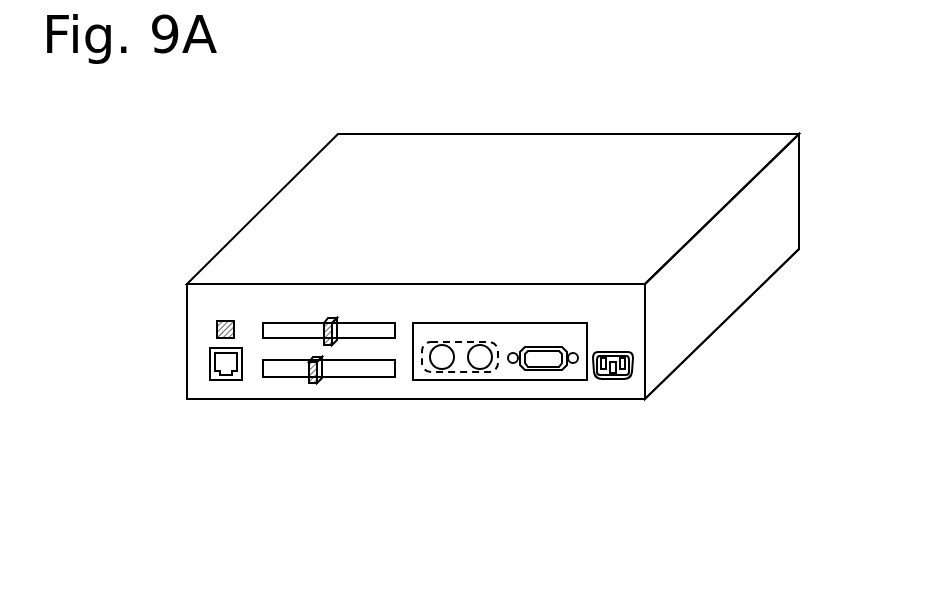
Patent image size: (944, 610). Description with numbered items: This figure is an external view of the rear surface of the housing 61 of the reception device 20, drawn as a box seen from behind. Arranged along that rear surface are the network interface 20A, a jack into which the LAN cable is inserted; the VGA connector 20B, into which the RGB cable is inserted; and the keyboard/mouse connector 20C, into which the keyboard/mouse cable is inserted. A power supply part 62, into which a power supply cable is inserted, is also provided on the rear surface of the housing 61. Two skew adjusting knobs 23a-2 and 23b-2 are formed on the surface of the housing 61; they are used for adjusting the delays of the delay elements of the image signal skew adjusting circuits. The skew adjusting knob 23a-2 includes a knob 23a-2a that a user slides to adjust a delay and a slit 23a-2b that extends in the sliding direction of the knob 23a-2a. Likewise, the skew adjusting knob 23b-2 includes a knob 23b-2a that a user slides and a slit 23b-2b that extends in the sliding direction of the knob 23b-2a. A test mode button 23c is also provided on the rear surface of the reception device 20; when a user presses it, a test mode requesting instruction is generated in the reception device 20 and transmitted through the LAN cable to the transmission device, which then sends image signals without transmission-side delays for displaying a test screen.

The reception device 20 is at (272, 106).
The network interface 20A is at (210, 368).
The VGA connector 20B is at (543, 345).
The keyboard/mouse connector 20C is at (452, 323).
The test mode button 23c is at (217, 330).
The skew adjusting knob 23a-2 is at (303, 527).
The knob 23a-2a is at (331, 346).
The slit 23a-2b is at (362, 339).
The skew adjusting knob 23b-2 is at (507, 465).
The knob 23b-2a is at (313, 383).
The slit 23b-2b is at (277, 378).
The housing 61 is at (718, 327).
The power supply part 62 is at (612, 379).